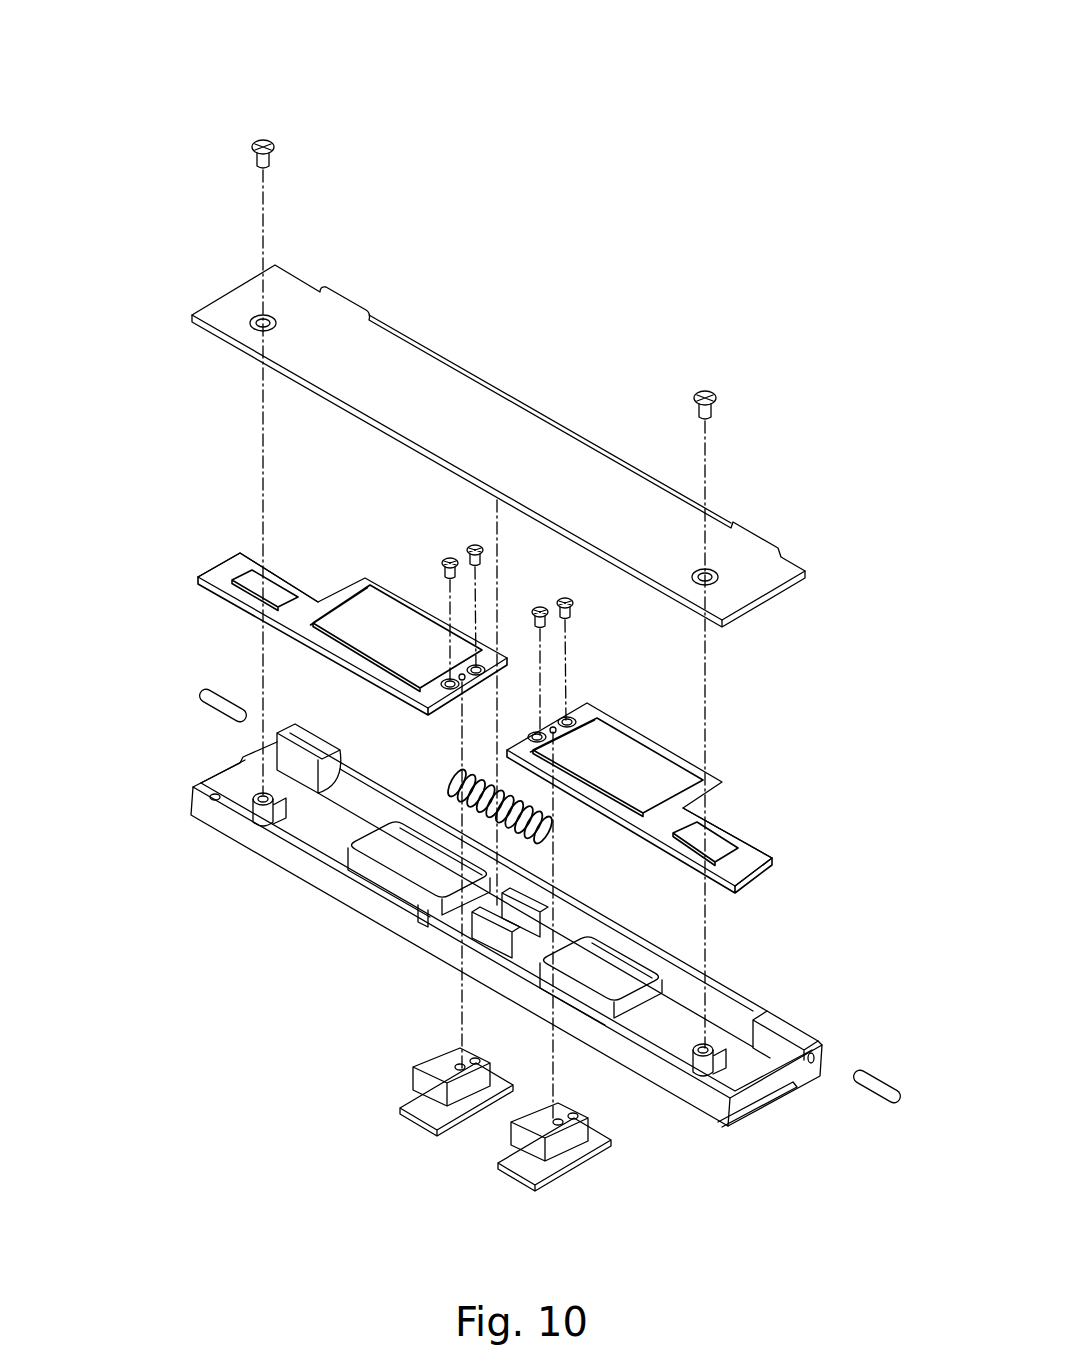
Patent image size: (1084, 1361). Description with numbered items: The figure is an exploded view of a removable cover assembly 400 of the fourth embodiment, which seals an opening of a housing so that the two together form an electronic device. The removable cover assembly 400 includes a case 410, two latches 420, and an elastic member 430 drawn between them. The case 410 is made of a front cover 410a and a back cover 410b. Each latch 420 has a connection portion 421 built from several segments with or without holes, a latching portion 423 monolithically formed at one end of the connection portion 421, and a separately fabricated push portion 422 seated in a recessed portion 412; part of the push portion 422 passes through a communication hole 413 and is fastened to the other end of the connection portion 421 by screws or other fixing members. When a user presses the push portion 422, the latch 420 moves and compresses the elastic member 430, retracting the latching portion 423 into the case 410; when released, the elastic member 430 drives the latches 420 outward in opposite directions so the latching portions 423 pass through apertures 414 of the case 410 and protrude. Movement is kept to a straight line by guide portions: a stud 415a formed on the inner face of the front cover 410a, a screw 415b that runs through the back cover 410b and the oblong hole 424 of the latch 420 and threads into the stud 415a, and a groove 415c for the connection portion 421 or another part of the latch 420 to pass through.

The removable cover assembly 400 is at (235, 88).
The case 410 is at (143, 490).
The front cover 410a is at (298, 373).
The back cover 410b is at (288, 728).
The recessed portion 412 is at (423, 862).
The communication hole 413 is at (470, 905).
The aperture 414 is at (215, 780).
The stud 415a is at (268, 815).
The screw 415b is at (252, 153).
The groove 415c is at (420, 873).
The latch 420 is at (374, 519).
The connection portion 421 is at (343, 643).
The push portion 422 is at (437, 693).
The latching portion 423 is at (228, 565).
The oblong hole 424 is at (272, 602).
The elastic member 430 is at (553, 837).